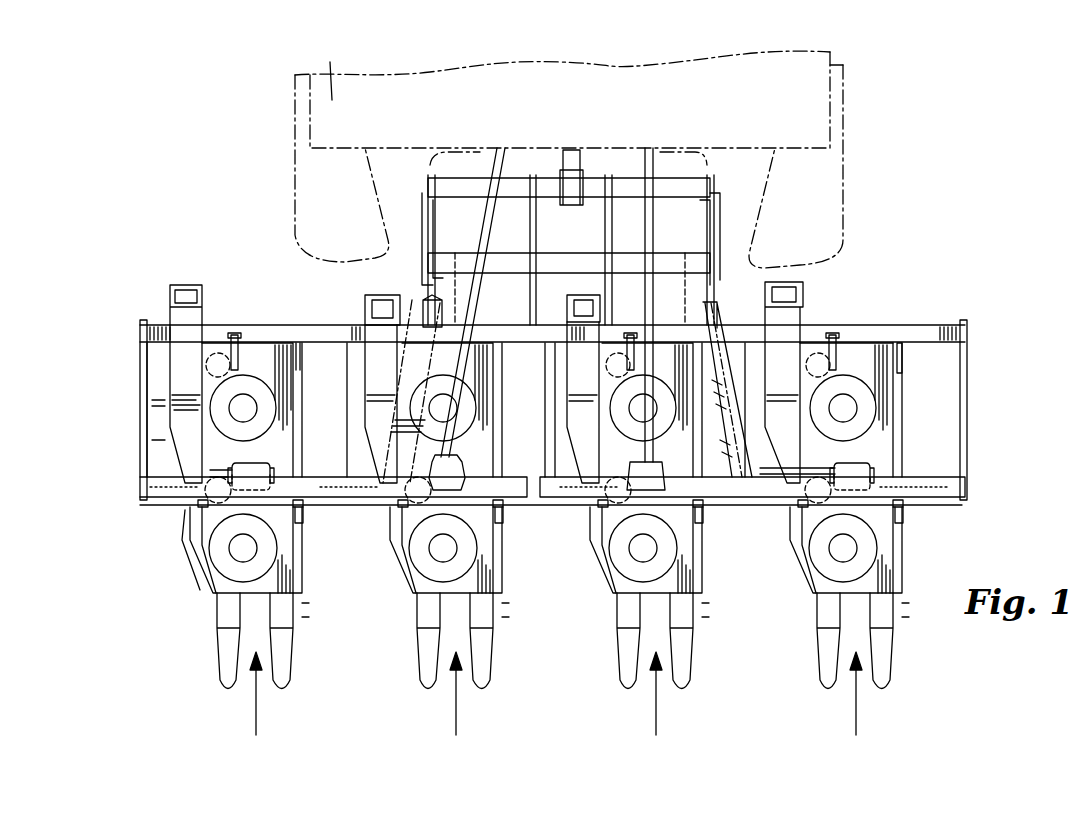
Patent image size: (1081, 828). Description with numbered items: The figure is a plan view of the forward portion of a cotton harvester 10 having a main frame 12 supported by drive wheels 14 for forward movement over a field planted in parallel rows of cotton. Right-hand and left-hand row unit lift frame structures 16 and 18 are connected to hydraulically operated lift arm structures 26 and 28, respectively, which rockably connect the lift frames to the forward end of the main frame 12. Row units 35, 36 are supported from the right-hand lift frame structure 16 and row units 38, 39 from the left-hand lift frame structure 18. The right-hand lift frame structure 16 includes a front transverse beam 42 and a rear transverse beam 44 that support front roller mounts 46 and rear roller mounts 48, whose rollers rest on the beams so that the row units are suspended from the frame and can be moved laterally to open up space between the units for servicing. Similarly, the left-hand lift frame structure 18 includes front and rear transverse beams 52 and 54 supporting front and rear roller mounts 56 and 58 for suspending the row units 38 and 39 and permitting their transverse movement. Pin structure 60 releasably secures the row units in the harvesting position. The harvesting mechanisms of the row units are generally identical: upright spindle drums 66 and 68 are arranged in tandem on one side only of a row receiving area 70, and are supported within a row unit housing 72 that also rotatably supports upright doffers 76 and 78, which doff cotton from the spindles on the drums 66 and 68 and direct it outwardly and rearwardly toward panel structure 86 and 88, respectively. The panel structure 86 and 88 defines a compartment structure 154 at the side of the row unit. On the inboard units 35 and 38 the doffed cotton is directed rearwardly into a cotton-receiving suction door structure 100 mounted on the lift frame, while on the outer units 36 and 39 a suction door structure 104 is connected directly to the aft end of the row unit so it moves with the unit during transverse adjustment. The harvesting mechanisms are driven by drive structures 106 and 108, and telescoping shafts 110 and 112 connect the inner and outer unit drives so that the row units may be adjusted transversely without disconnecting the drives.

The cotton harvester 10 is at (598, 153).
The main frame 12 is at (562, 93).
The drive wheels 14 is at (296, 155).
The right-hand row unit lift frame structure 16 is at (135, 310).
The left-hand row unit lift frame structure 18 is at (975, 308).
The hydraulically operated lift arm structure 26 is at (571, 237).
The hydraulically operated lift arm structure 28 is at (600, 250).
The row unit 35 is at (408, 656).
The row unit 36 is at (325, 606).
The row unit 38 is at (715, 648).
The row unit 39 is at (808, 655).
The front transverse beam 42 is at (345, 492).
The rear transverse beam 44 is at (335, 345).
The front roller mounts 46 is at (200, 498).
The rear roller mounts 48 is at (238, 333).
The front transverse beam 52 is at (778, 485).
The rear transverse beam 54 is at (895, 325).
The front roller mounts 56 is at (598, 508).
The rear roller mounts 58 is at (640, 340).
The pin structure 60 is at (302, 392).
The spindle drum 66 is at (276, 560).
The spindle drum 68 is at (272, 416).
The row receiving area 70 is at (255, 660).
The row unit housing 72 is at (300, 460).
The doffer 76 is at (222, 461).
The doffer 78 is at (216, 350).
The panel structure 86 is at (160, 454).
The panel structure 88 is at (160, 372).
The cotton-receiving suction door structure 100 is at (356, 304).
The cotton-receiving suction door structure 104 is at (158, 290).
The drive structure 106 is at (470, 465).
The drive structure 108 is at (622, 473).
The telescoping shaft 110 is at (365, 478).
The telescoping shaft 112 is at (728, 490).
The compartment structure 154 is at (178, 553).